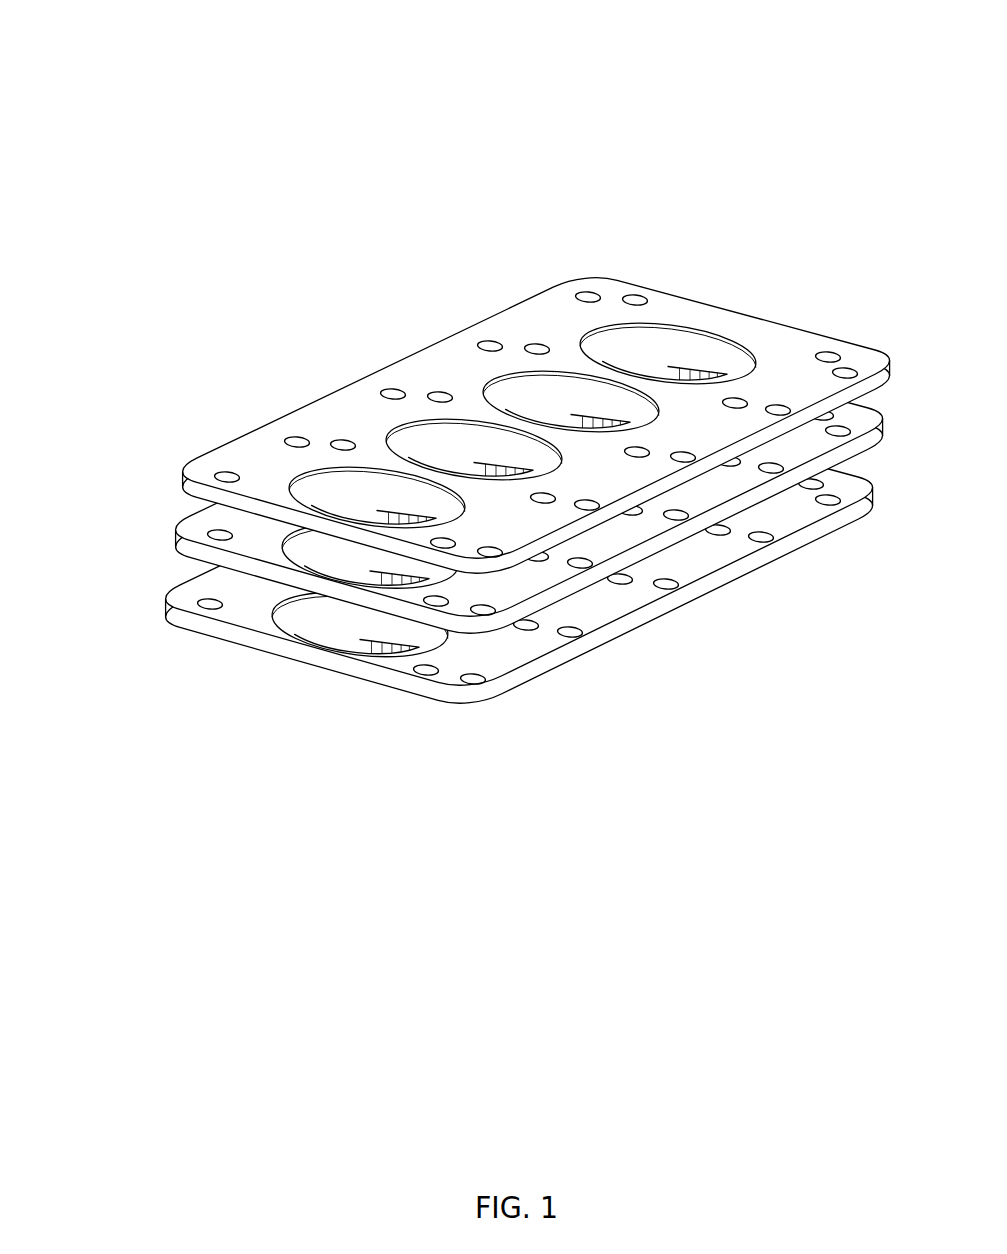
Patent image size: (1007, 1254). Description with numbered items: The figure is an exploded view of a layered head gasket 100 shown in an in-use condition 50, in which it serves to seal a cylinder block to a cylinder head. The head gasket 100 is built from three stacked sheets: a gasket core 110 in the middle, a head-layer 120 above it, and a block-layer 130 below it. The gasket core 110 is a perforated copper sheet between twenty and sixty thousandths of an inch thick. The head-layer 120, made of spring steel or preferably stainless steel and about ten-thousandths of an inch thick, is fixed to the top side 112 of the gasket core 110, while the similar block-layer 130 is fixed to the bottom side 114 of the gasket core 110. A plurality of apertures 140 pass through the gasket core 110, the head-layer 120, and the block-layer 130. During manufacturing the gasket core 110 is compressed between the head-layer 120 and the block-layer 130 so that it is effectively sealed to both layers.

The in-use condition 50 is at (848, 78).
The head gasket 100 is at (845, 52).
The gasket core 110 is at (456, 536).
The top side 112 is at (210, 523).
The bottom side 114 is at (207, 570).
The head-layer 120 is at (267, 443).
The block-layer 130 is at (647, 598).
The plurality of apertures 140 is at (480, 462).